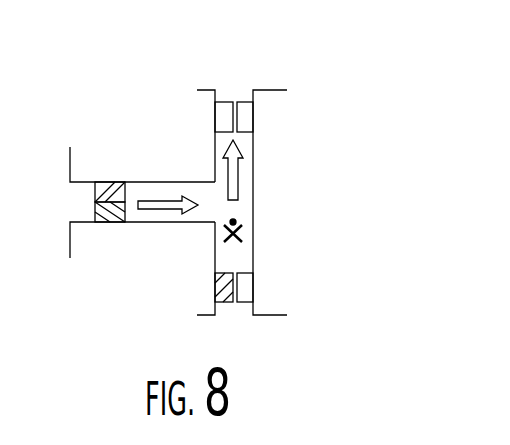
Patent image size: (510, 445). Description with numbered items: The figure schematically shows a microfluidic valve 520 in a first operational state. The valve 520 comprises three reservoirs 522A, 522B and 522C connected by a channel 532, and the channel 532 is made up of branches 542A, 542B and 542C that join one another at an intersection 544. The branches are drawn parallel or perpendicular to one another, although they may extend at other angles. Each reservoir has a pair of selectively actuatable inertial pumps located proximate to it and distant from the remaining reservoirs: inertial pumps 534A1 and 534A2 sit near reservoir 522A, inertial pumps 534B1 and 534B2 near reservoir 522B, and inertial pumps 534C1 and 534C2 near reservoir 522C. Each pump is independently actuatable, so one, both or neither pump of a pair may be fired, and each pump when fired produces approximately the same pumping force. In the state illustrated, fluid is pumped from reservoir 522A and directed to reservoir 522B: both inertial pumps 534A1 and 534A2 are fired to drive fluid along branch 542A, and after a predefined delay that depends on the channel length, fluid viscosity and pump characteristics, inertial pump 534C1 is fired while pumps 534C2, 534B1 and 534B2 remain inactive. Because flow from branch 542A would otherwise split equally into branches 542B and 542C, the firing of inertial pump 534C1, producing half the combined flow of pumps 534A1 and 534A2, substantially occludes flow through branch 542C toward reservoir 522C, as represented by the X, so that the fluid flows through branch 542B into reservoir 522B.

The microfluidic valve 520 is at (86, 85).
The reservoir 522A is at (70, 160).
The reservoir 522B is at (270, 84).
The reservoir 522C is at (273, 317).
The channel 532 is at (143, 182).
The inertial pump 534A1 is at (105, 223).
The inertial pump 534A2 is at (126, 196).
The inertial pump 534B1 is at (213, 117).
The inertial pump 534B2 is at (253, 115).
The inertial pump 534C1 is at (213, 302).
The inertial pump 534C2 is at (253, 295).
The branch 542A is at (85, 180).
The branch 542B is at (253, 180).
The branch 542C is at (258, 262).
The intersection 544 is at (212, 225).